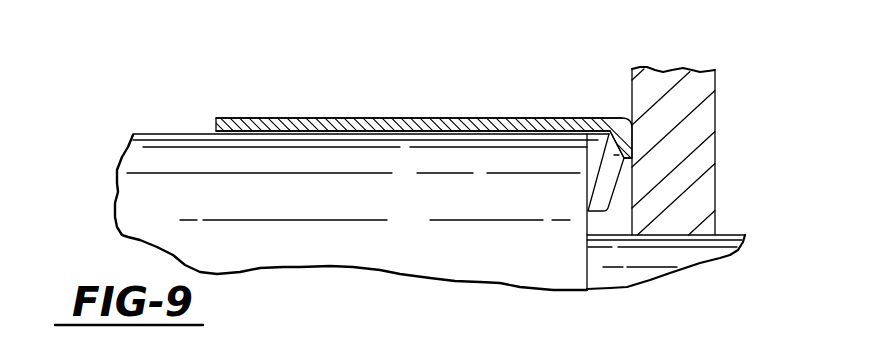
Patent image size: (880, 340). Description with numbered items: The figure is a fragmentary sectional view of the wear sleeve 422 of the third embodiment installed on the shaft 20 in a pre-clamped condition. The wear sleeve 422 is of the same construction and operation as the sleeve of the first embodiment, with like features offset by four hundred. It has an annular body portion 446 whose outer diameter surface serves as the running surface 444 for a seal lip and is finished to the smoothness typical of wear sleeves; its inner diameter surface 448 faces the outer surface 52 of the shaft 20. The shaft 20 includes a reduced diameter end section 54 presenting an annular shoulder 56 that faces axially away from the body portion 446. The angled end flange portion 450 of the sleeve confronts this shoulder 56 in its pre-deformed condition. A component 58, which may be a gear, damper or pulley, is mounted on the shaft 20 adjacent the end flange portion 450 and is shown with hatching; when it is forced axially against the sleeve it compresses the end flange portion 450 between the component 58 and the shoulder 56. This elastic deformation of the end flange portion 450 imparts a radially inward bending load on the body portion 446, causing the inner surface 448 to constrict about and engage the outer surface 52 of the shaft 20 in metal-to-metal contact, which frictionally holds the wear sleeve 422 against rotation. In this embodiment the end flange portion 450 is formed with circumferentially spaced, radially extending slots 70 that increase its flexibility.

The shaft 20 is at (137, 202).
The outer surface 52 is at (163, 134).
The reduced diameter end section 54 is at (730, 235).
The shoulder 56 is at (588, 218).
The component 58 is at (703, 91).
The radially extending slots 70 is at (600, 195).
The wear sleeve 422 is at (333, 106).
The running surface 444 is at (408, 128).
The body portion 446 is at (488, 128).
The inner diameter surface 448 is at (413, 131).
The end flange portion 450 is at (622, 166).